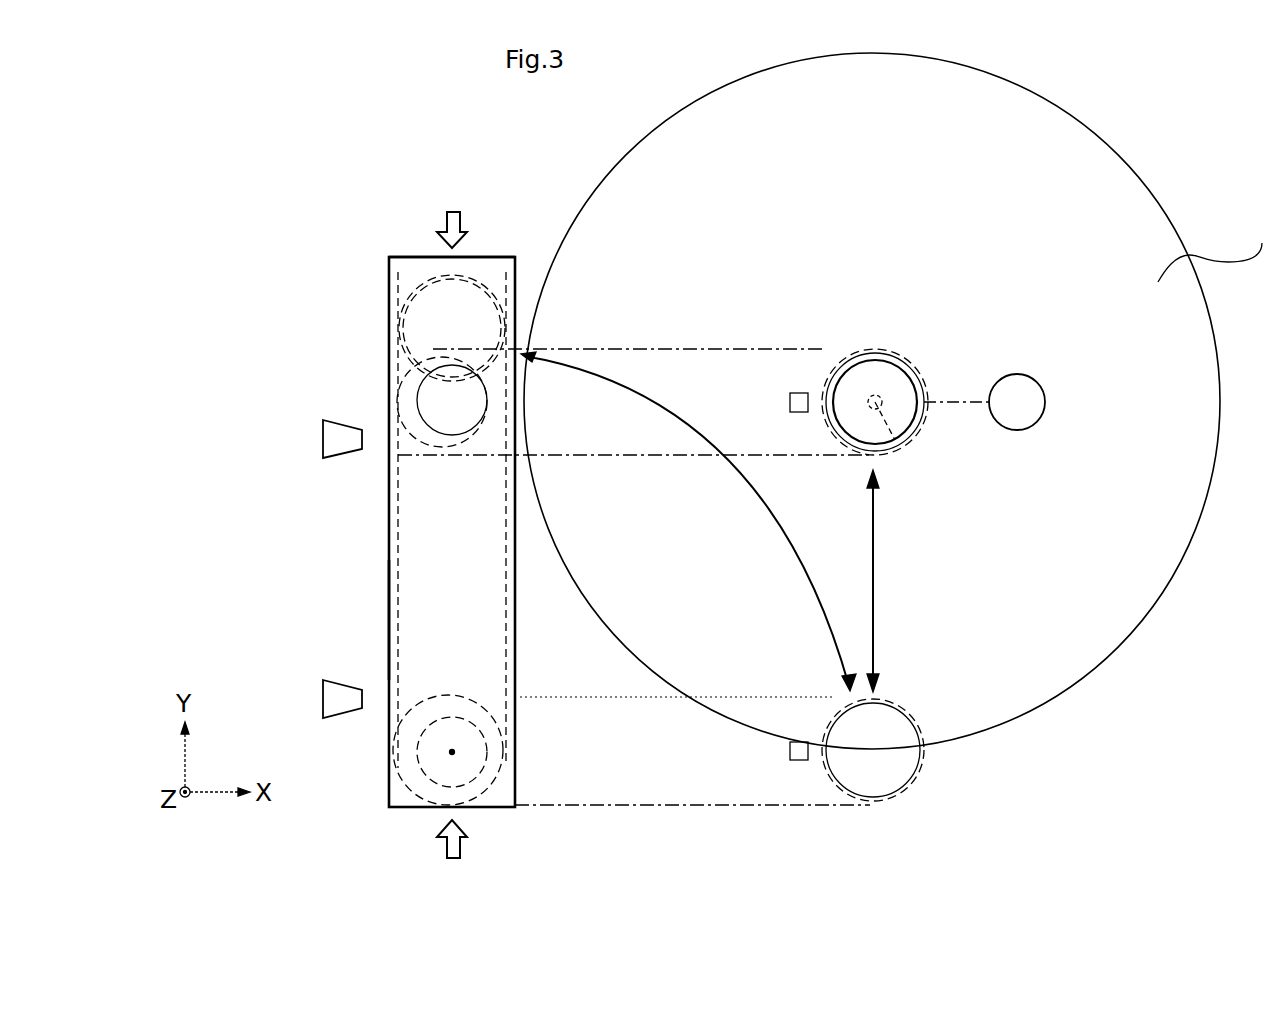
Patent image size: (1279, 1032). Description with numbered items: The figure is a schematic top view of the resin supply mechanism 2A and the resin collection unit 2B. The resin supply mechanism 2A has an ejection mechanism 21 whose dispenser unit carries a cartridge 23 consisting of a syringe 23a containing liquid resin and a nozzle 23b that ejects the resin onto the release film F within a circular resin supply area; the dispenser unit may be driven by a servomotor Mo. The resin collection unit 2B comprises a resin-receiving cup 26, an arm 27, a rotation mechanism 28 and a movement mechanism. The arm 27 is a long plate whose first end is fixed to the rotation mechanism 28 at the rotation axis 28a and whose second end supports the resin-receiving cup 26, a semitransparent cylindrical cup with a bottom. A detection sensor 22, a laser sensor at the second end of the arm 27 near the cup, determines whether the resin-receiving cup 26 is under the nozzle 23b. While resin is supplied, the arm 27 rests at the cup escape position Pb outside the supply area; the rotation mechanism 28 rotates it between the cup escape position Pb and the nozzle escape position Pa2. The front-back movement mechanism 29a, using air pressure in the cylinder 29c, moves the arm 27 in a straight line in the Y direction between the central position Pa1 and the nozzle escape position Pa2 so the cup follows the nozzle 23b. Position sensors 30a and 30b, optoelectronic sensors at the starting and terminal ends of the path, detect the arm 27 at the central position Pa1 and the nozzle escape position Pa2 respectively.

The resin supply mechanism 2A is at (1149, 137).
The resin collection unit 2B is at (300, 340).
The release film F is at (1218, 249).
The ejection mechanism 21 is at (877, 352).
The detection sensor 22 is at (803, 392).
The cartridge 23 is at (920, 422).
The syringe 23a is at (900, 392).
The nozzle 23b is at (880, 412).
The resin-receiving cup 26 is at (400, 286).
The arm 27 is at (418, 565).
The rotation mechanism 28 is at (452, 432).
The rotation axis 28a is at (452, 750).
The front-back movement mechanism 29a is at (386, 492).
The cylinder 29c is at (389, 615).
The position sensor 30a is at (332, 440).
The position sensor 30b is at (330, 700).
The central position Pa1 is at (903, 328).
The nozzle escape position Pa2 is at (881, 826).
The cup escape position Pb is at (485, 275).
The servomotor Mo is at (1017, 402).